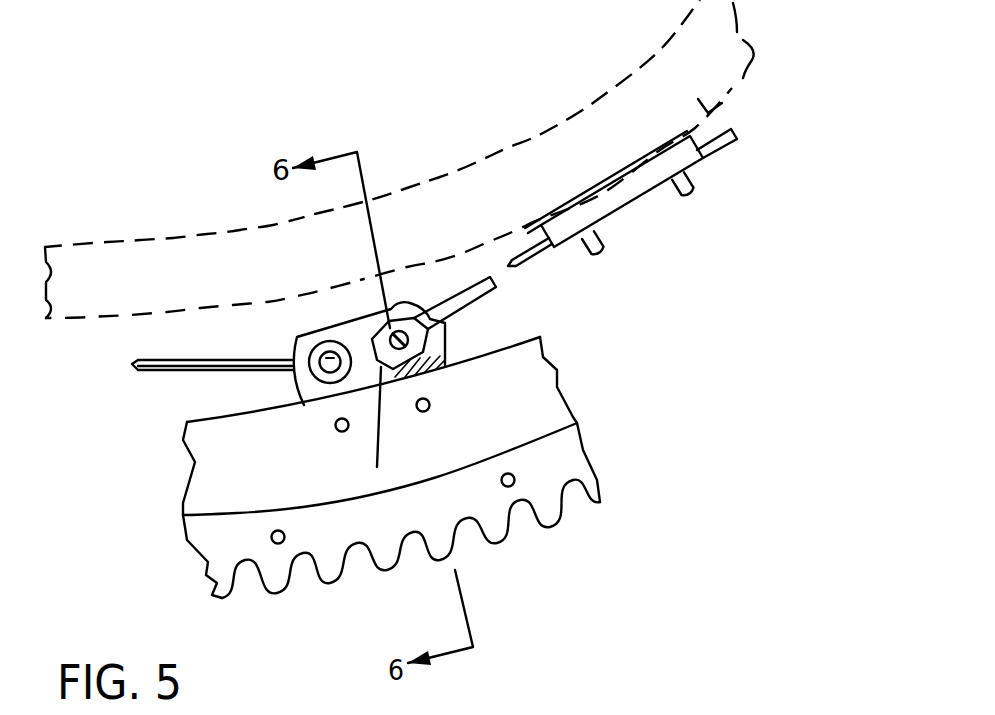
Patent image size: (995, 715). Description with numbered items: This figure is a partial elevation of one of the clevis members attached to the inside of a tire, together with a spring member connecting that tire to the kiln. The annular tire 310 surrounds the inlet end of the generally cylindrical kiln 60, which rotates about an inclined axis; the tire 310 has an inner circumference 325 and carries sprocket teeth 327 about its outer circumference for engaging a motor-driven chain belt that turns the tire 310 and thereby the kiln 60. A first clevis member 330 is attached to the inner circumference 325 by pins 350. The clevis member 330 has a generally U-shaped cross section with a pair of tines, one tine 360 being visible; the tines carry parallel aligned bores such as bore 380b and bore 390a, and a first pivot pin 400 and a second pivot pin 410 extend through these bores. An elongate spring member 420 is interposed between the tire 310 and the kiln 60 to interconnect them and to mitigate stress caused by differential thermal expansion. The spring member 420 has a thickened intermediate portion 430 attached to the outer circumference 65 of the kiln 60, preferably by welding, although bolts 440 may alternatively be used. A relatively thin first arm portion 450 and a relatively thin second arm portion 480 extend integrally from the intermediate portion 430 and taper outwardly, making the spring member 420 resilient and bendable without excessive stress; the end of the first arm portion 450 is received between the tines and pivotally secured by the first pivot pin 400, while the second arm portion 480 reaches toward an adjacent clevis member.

The outer circumference 65 is at (743, 78).
The kiln 60 is at (708, 112).
The second arm portion 480 is at (715, 155).
The bolts 440 is at (682, 203).
The thickened intermediate portion 430 is at (603, 210).
The spring member 420 is at (168, 359).
The first arm portion 450 is at (466, 324).
The inner circumference 325 is at (513, 343).
The tire 310 is at (416, 453).
The bore 390a is at (392, 328).
The bore 380b is at (318, 345).
The tine 360 is at (292, 375).
The first clevis member 330 is at (298, 392).
The first pivot pin 400 is at (330, 383).
The second pivot pin 410 is at (354, 426).
The pins 350 is at (428, 412).
The sprocket teeth 327 is at (502, 528).